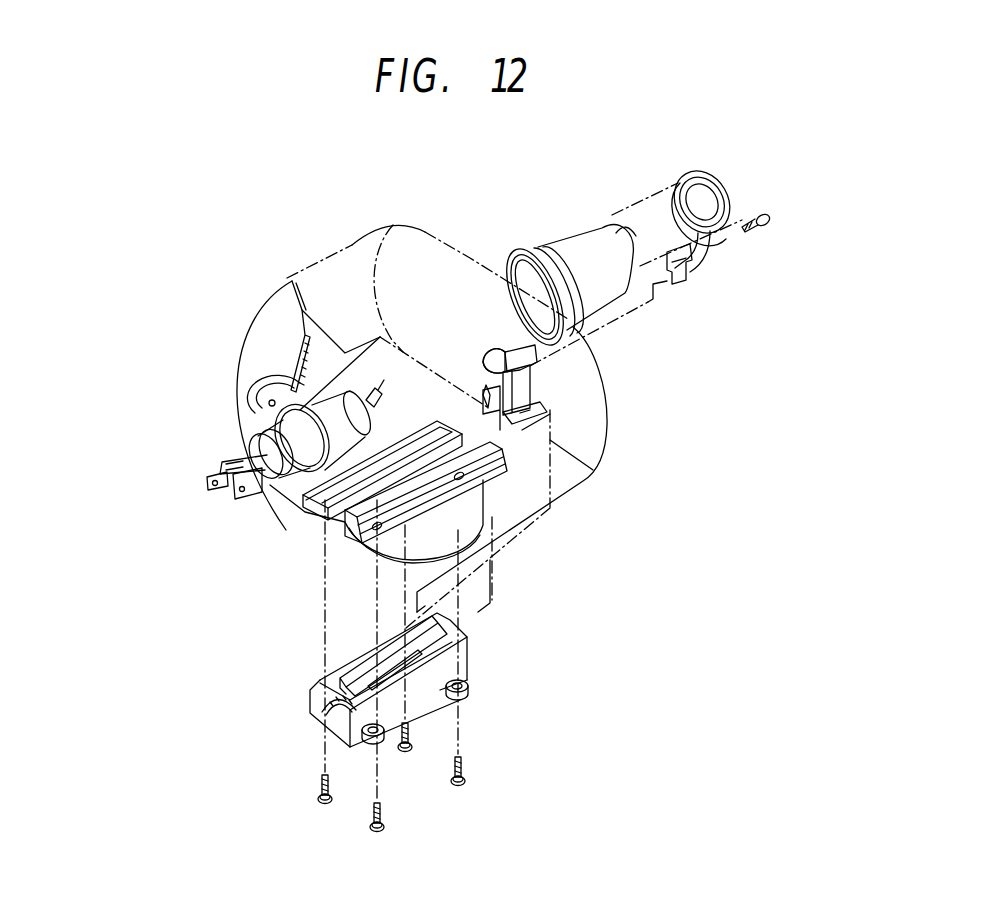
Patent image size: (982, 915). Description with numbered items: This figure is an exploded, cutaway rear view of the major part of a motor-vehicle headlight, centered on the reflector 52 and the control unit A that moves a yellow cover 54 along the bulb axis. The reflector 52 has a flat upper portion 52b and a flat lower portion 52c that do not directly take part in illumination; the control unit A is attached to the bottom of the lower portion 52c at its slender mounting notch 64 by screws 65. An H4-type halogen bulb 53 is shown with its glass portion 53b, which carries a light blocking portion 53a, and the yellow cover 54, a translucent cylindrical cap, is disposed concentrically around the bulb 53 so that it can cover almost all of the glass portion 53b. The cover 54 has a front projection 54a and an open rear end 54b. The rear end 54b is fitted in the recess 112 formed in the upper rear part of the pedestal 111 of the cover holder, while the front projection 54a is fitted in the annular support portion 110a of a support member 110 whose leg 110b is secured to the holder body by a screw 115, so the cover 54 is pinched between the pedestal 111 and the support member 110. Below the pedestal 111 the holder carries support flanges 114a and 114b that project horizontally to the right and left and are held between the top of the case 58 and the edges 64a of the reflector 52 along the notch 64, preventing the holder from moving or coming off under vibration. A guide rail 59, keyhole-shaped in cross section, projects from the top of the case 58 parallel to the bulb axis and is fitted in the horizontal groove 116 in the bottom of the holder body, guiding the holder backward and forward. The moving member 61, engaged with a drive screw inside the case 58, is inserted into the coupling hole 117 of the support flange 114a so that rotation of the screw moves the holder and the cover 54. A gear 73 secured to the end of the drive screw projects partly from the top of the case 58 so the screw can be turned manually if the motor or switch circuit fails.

The reflector 52 is at (256, 308).
The upper portion 52b is at (432, 250).
The lower portion 52c is at (389, 337).
The halogen bulb 53 is at (278, 488).
The light blocking portion 53a is at (368, 398).
The glass portion 53b is at (330, 403).
The yellow cover 54 is at (569, 233).
The front projection 54a is at (612, 224).
The open rear end 54b is at (522, 300).
The case 58 is at (470, 627).
The guide rail 59 is at (366, 658).
The moving member 61 is at (420, 655).
The slender mounting notch 64 is at (358, 492).
The edges 64a is at (423, 427).
The screws 65 is at (463, 770).
The gear 73 is at (333, 712).
The control unit A is at (308, 696).
The support member 110 is at (720, 186).
The annular support portion 110a is at (700, 173).
The leg 110b is at (690, 272).
The pedestal 111 is at (527, 380).
The recess 112 is at (493, 353).
The support flange 114a is at (518, 420).
The support flange 114b is at (484, 402).
The screw 115 is at (752, 234).
The horizontal groove 116 is at (500, 418).
The coupling hole 117 is at (535, 410).